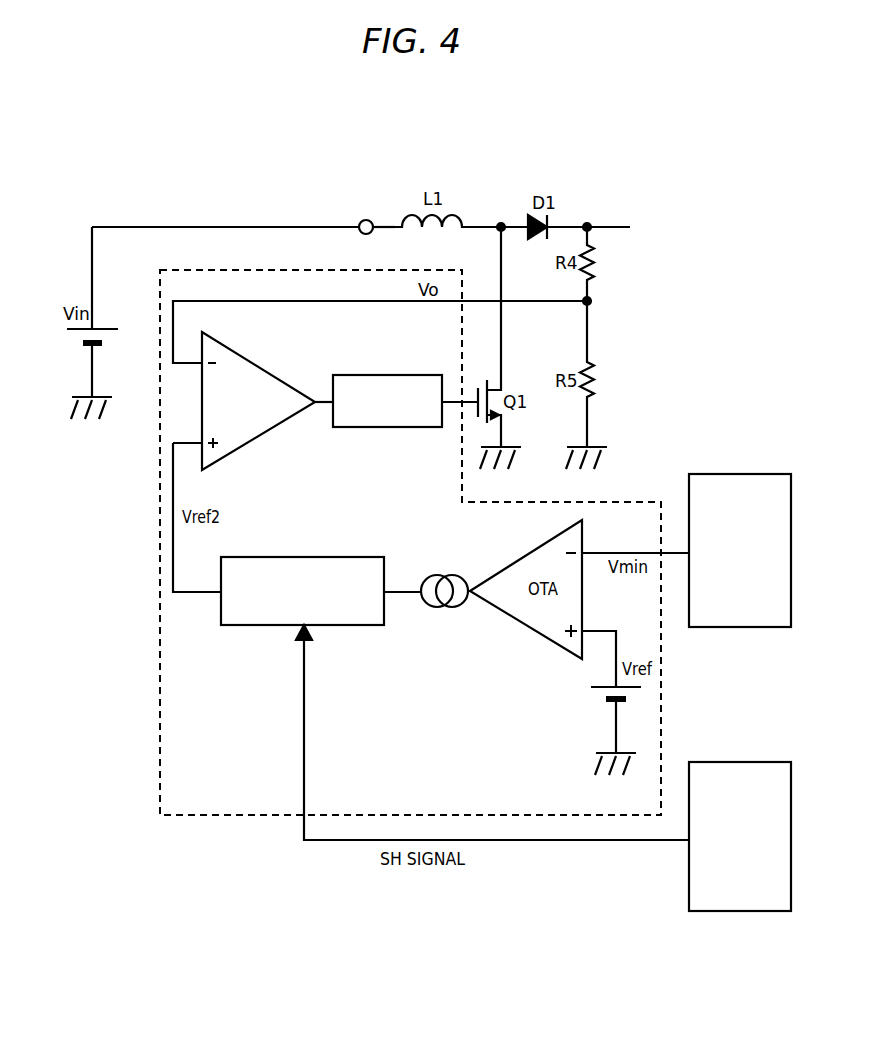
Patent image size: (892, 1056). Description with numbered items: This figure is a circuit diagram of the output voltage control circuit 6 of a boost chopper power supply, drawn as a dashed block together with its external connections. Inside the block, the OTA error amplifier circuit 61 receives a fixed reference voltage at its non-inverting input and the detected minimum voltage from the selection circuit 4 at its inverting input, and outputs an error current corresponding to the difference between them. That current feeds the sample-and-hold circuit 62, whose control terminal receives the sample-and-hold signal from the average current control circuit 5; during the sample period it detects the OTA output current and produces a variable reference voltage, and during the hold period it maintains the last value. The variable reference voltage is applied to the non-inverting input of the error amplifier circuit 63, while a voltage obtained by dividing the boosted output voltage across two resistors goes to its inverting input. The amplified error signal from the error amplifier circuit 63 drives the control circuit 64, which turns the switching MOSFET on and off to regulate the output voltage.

The selection circuit 4 is at (725, 474).
The average current control circuit 5 is at (758, 762).
The output voltage control circuit 6 is at (158, 648).
The OTA error amplifier circuit 61 is at (521, 558).
The sample-and-hold circuit 62 is at (313, 557).
The error amplifier circuit 63 is at (248, 357).
The control circuit 64 is at (359, 375).